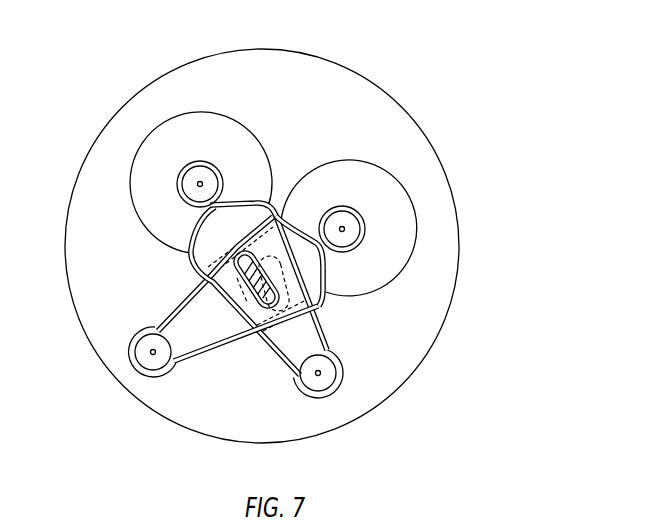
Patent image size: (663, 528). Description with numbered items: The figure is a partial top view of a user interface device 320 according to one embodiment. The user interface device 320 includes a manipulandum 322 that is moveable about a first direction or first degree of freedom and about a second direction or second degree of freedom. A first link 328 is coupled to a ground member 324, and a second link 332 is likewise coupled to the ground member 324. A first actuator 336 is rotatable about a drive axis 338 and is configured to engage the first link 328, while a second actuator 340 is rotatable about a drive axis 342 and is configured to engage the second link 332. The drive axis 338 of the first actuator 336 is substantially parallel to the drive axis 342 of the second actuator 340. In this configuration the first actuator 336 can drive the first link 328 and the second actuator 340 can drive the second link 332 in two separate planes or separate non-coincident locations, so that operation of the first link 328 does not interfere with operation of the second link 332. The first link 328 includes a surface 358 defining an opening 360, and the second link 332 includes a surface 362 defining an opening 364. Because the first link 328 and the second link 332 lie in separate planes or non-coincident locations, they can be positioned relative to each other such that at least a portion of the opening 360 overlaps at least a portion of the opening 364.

The user interface device 320 is at (565, 105).
The manipulandum 322 is at (240, 296).
The ground member 324 is at (370, 97).
The first link 328 is at (276, 200).
The second link 332 is at (334, 306).
The first actuator 336 is at (138, 188).
The drive axis 338 is at (200, 184).
The second actuator 340 is at (403, 222).
The drive axis 342 is at (343, 229).
The surface 358 is at (247, 213).
The opening 360 is at (238, 261).
The surface 362 is at (188, 333).
The opening 364 is at (233, 311).